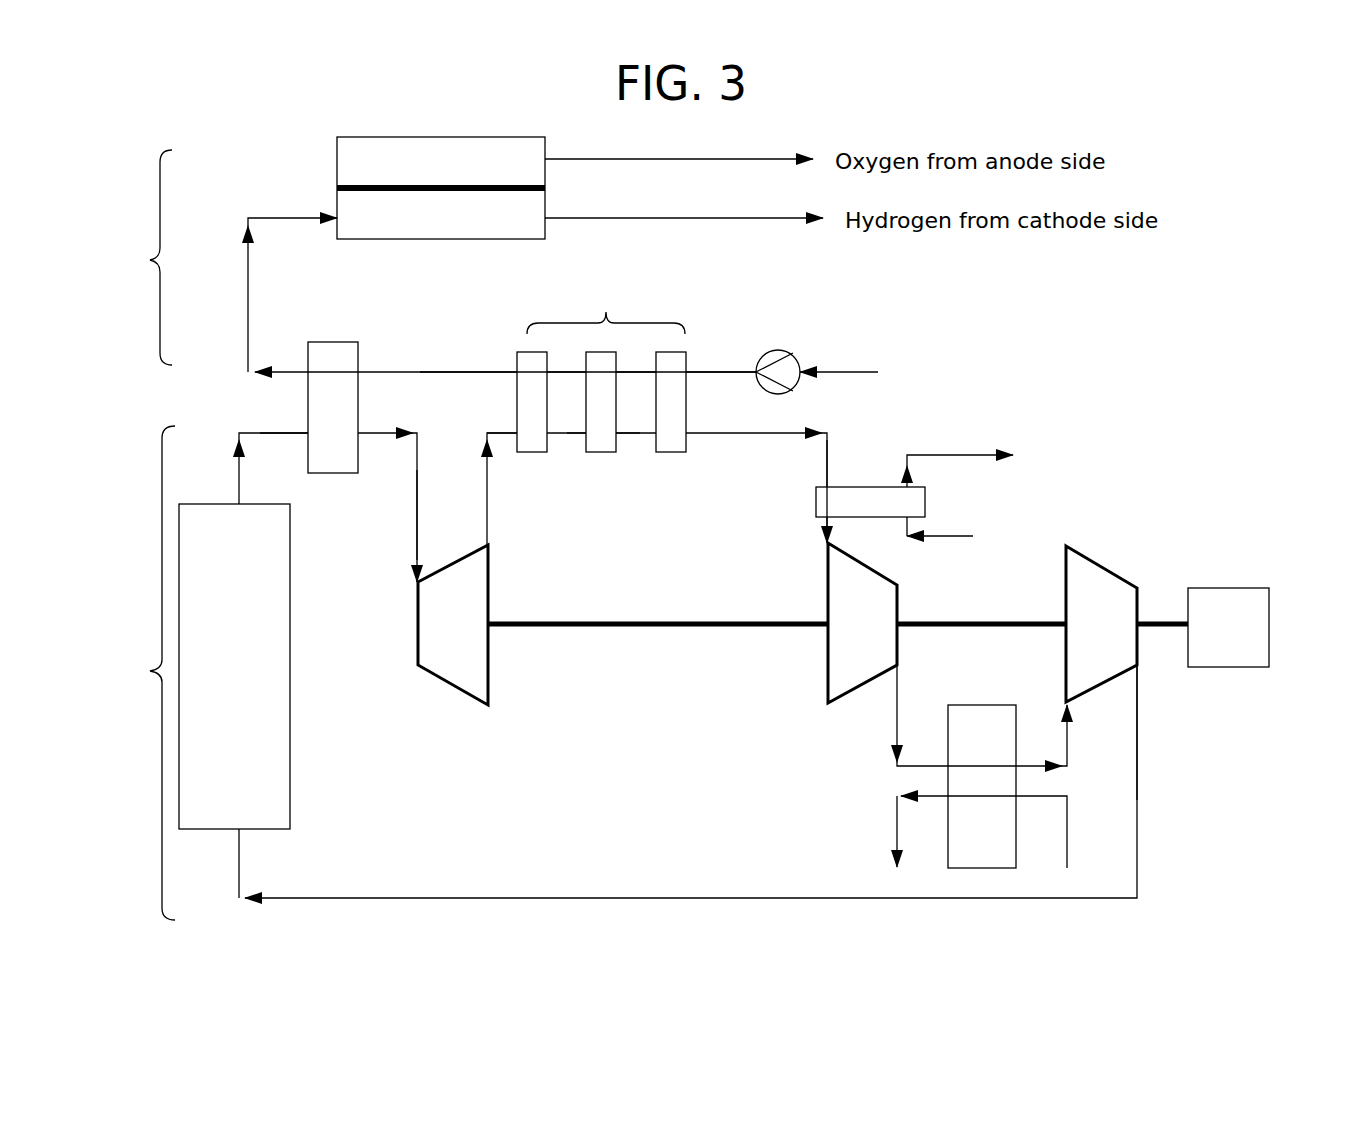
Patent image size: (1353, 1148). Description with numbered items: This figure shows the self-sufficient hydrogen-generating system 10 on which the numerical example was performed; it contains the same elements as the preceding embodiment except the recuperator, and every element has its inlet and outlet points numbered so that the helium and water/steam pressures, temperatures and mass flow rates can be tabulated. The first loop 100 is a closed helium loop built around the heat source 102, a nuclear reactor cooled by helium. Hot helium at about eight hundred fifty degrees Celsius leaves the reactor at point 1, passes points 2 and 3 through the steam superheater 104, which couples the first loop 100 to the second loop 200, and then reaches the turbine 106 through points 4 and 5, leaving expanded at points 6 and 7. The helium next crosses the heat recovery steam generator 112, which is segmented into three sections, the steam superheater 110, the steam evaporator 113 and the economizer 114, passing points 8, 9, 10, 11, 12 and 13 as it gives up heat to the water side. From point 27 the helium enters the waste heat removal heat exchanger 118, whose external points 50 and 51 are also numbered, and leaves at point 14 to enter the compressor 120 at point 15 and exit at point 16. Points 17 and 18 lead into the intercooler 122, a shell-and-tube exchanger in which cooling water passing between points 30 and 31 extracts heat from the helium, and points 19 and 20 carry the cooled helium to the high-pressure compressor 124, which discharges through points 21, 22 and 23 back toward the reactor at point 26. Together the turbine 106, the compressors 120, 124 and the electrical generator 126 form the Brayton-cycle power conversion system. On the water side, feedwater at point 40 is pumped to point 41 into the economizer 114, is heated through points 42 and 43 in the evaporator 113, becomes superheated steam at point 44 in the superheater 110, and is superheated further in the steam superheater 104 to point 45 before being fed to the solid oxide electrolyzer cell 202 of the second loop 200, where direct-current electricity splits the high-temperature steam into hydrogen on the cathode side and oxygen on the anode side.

The helium inlet/outlet point 1 is at (273, 468).
The helium inlet/outlet point 2 is at (284, 416).
The helium inlet/outlet point 3 is at (387, 491).
The helium inlet/outlet point 4 is at (403, 530).
The helium inlet/outlet point 5 is at (428, 611).
The helium inlet/outlet point 6 is at (476, 572).
The helium inlet/outlet point 7 is at (491, 489).
The helium inlet/outlet point 8 is at (502, 416).
The helium inlet/outlet point 9 is at (548, 424).
The system 10 is at (1152, 296).
The helium inlet/outlet point 11 is at (617, 437).
The helium inlet/outlet point 12 is at (656, 424).
The helium inlet/outlet point 13 is at (688, 424).
The helium inlet/outlet point 14 is at (811, 531).
The helium inlet/outlet point 15 is at (844, 571).
The helium inlet/outlet point 16 is at (881, 642).
The helium inlet/outlet point 17 is at (915, 704).
The helium inlet/outlet point 18 is at (922, 749).
The helium inlet/outlet point 19 is at (1005, 749).
The helium inlet/outlet point 20 is at (1084, 734).
The helium inlet/outlet point 21 is at (1083, 676).
The helium inlet/outlet point 22 is at (1122, 642).
The helium inlet/outlet point 23 is at (1154, 731).
The helium inlet/outlet point 26 is at (668, 781).
The helium inlet/outlet point 27 is at (811, 465).
The coolant stream entering heat exchanger 30 is at (1041, 832).
The coolant stream leaving heat exchanger 31 is at (956, 831).
The water/steam inlet/outlet point 40 is at (817, 367).
The water/steam inlet/outlet point 41 is at (721, 356).
The water/steam inlet/outlet point 42 is at (636, 356).
The water/steam inlet/outlet point 43 is at (566, 356).
The water/steam inlet/outlet point 44 is at (468, 356).
The water/steam inlet/outlet point 45 is at (505, 356).
The coolant inlet stream 50 is at (959, 533).
The coolant outlet stream 51 is at (980, 466).
The first loop 100 is at (141, 673).
The heat source 102 is at (290, 792).
The steam superheater 104 is at (332, 475).
The turbine 106 is at (445, 680).
The steam superheater 110 is at (528, 453).
The heat recovery steam generator 112 is at (606, 308).
The steam evaporator 113 is at (598, 453).
The economizer 114 is at (672, 453).
The waste heat removal heat exchanger 118 is at (925, 500).
The compressor 120 is at (826, 705).
The intercooler 122 is at (1012, 705).
The high-pressure compressor 124 is at (1100, 566).
The electrical generator 126 is at (1232, 588).
The second loop 200 is at (138, 257).
The solid oxide electrolyzer cell 202 is at (405, 241).